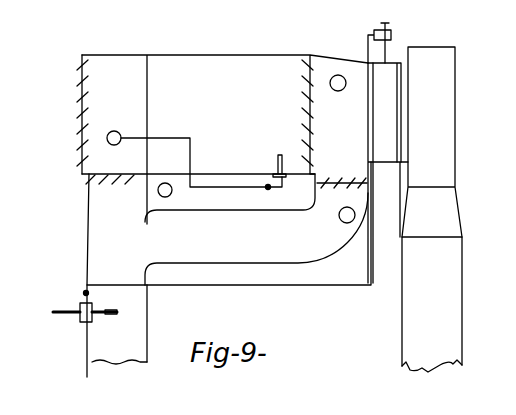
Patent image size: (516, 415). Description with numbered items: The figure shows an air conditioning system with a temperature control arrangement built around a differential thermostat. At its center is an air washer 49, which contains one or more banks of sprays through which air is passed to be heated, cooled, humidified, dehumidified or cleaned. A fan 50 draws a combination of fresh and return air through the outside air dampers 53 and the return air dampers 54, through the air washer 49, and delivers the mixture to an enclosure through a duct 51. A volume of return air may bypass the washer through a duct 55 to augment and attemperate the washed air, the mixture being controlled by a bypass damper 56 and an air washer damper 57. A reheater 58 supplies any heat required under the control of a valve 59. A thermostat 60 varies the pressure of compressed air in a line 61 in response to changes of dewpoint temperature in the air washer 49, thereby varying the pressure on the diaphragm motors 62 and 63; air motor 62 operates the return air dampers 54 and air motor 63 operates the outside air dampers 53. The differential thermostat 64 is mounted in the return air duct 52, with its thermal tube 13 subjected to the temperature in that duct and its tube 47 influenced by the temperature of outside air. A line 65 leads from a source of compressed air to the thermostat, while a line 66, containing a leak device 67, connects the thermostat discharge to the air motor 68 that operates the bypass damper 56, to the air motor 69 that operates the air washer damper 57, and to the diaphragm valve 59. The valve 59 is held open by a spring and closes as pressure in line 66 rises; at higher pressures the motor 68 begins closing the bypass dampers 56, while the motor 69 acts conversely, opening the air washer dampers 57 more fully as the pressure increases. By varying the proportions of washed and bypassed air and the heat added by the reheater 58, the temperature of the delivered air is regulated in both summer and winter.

The thermal tube 13 is at (100, 317).
The tube 47 is at (68, 306).
The air washer 49 is at (225, 139).
The fan 50 is at (444, 125).
The duct 51 is at (452, 310).
The return air duct 52 is at (119, 324).
The outside air dampers 53 is at (79, 98).
The return air dampers 54 is at (96, 166).
The duct 55 is at (229, 223).
The bypass damper 56 is at (342, 180).
The air washer damper 57 is at (311, 130).
The reheater 58 is at (384, 112).
The valve 59 is at (392, 35).
The thermostat 60 is at (277, 158).
The line 61 is at (233, 190).
The diaphragm motor 62 is at (136, 177).
The diaphragm motor 63 is at (83, 110).
The differential thermostat 64 is at (80, 322).
The line 65 is at (87, 364).
The line 66 is at (309, 287).
The leak device 67 is at (84, 292).
The air motor 68 is at (328, 188).
The air motor 69 is at (368, 83).